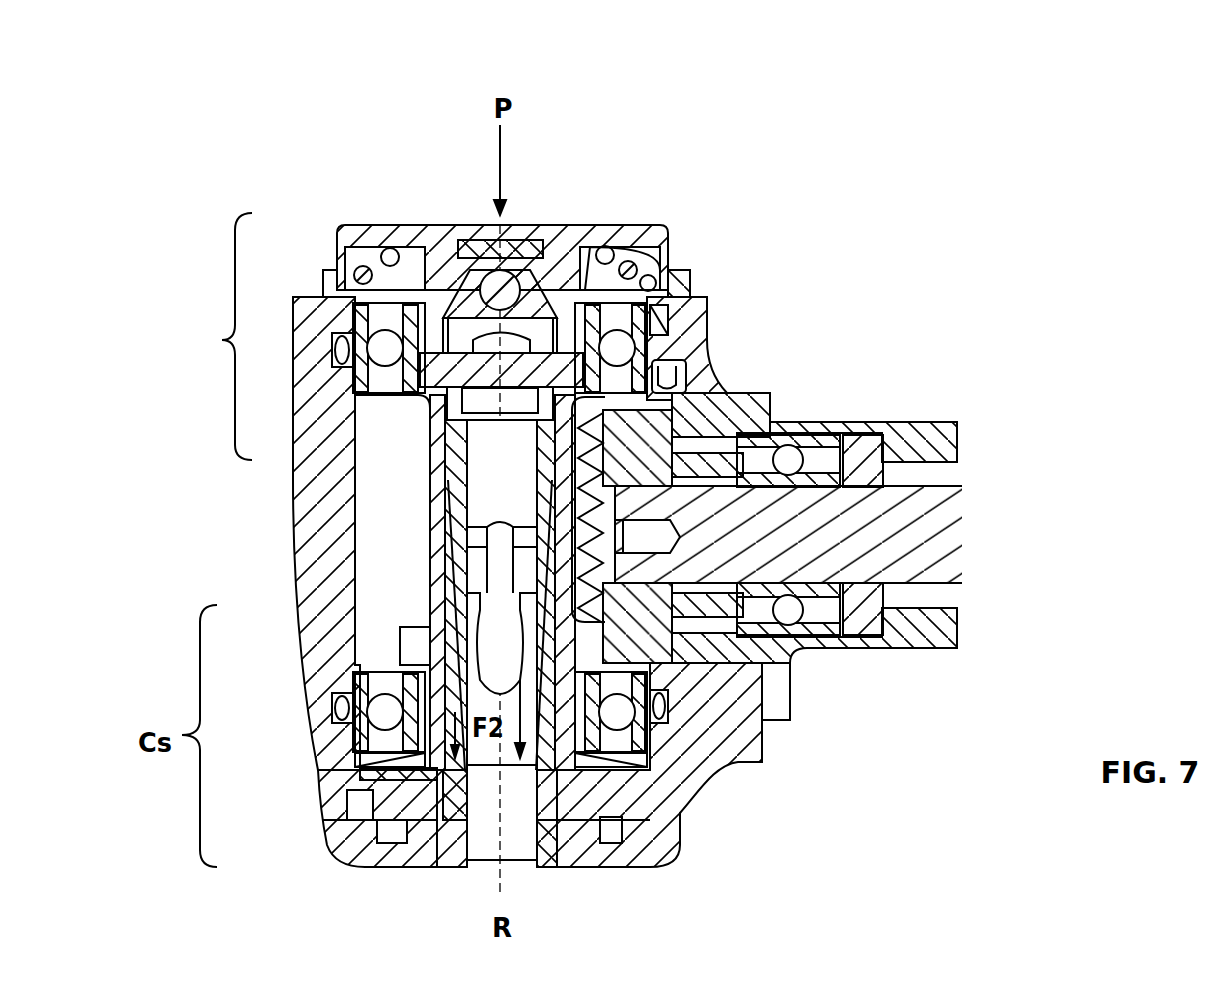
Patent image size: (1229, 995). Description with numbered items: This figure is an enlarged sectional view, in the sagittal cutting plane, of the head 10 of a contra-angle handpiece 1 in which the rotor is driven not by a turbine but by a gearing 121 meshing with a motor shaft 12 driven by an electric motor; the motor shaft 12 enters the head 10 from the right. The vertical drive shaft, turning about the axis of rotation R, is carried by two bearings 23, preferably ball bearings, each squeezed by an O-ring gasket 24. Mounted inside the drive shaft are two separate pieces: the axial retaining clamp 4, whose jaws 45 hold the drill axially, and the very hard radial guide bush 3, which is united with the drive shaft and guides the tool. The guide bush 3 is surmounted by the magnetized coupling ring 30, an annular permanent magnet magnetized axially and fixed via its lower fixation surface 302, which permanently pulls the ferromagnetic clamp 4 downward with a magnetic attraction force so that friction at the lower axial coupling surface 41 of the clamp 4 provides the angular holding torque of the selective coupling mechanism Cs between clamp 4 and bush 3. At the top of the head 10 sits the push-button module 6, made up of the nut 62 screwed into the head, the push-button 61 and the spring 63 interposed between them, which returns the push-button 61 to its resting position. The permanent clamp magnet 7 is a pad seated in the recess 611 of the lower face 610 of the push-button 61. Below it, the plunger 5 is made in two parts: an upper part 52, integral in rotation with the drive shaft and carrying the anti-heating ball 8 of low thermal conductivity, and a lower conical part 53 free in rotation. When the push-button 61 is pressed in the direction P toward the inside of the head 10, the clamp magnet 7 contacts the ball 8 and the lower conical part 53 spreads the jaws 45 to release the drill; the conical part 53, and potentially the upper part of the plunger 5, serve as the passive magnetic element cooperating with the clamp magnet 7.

The handpiece 1 is at (208, 178).
The radial guide bush 3 is at (435, 868).
The axial retaining clamp 4 is at (455, 655).
The plunger 5 is at (548, 315).
The push-button module 6 is at (217, 336).
The permanent clamp magnet 7 is at (490, 250).
The anti-heating ball 8 is at (513, 275).
The head 10 is at (308, 520).
The motor shaft 12 is at (950, 547).
The bearings 23 is at (658, 318).
The O-ring gaskets 24 is at (672, 350).
The magnetized coupling ring 30 is at (478, 868).
The lower axial coupling surface 41 is at (365, 772).
The jaws 45 is at (465, 580).
The upper part of the plunger 52 is at (458, 262).
The lower conical part 53 is at (445, 455).
The push-button 61 is at (415, 225).
The nut 62 is at (712, 385).
The spring 63 is at (363, 266).
The gearing 121 is at (680, 660).
The lower fixation surface 302 is at (546, 870).
The lower face 610 is at (662, 290).
The recess 611 is at (555, 300).